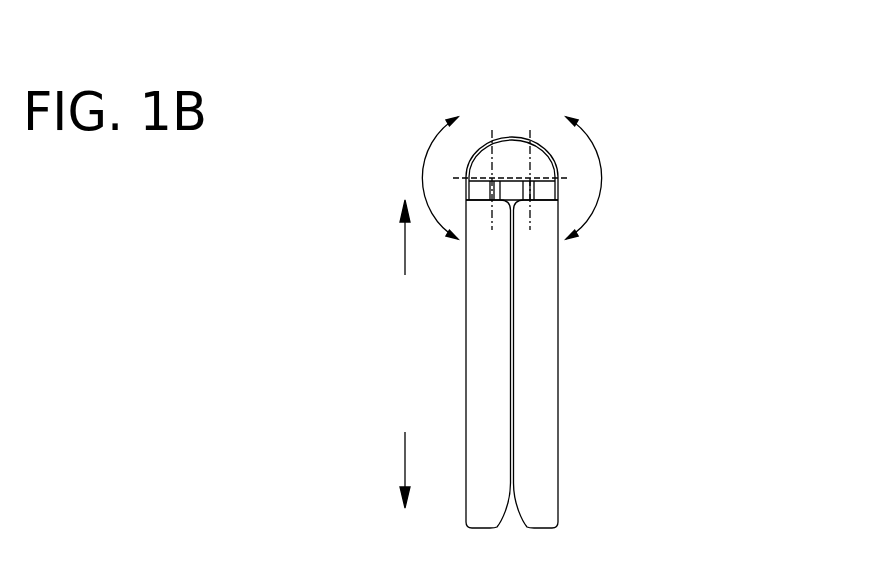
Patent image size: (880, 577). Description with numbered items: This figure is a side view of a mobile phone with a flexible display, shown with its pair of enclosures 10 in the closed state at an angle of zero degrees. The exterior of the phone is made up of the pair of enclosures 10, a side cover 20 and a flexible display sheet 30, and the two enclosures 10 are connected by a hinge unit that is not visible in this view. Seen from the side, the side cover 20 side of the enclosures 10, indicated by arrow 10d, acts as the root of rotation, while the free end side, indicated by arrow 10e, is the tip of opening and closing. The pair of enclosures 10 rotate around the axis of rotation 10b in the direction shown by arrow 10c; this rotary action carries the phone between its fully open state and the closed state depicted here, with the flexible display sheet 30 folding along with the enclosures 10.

The enclosure 10 is at (478, 363).
The axis of rotation 10b is at (489, 176).
The arrow indicating rotation direction 10c is at (427, 152).
The arrow indicating side cover side 10d is at (405, 245).
The arrow indicating free end side 10e is at (405, 478).
The side cover 20 is at (517, 150).
The flexible display sheet 30 is at (494, 176).